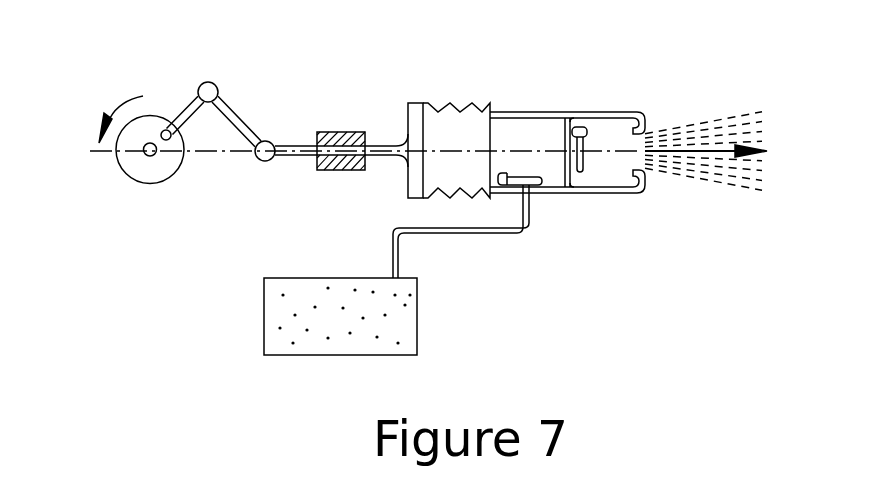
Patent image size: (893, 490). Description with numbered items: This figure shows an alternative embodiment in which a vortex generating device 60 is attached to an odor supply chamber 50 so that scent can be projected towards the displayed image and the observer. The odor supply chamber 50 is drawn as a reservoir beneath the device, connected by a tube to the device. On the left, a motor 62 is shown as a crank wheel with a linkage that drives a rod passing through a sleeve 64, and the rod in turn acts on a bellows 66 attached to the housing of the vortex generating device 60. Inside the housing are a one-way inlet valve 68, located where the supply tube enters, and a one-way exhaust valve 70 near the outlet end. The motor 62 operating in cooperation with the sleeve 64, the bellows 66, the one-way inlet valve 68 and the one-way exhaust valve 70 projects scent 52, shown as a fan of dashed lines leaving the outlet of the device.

The odor supply chamber 50 is at (283, 338).
The scent 52 is at (705, 122).
The vortex generating device 60 is at (553, 101).
The motor 62 is at (111, 116).
The sleeve 64 is at (317, 139).
The bellows 66 is at (447, 106).
The one-way inlet valve 68 is at (517, 180).
The one-way exhaust valve 70 is at (585, 168).